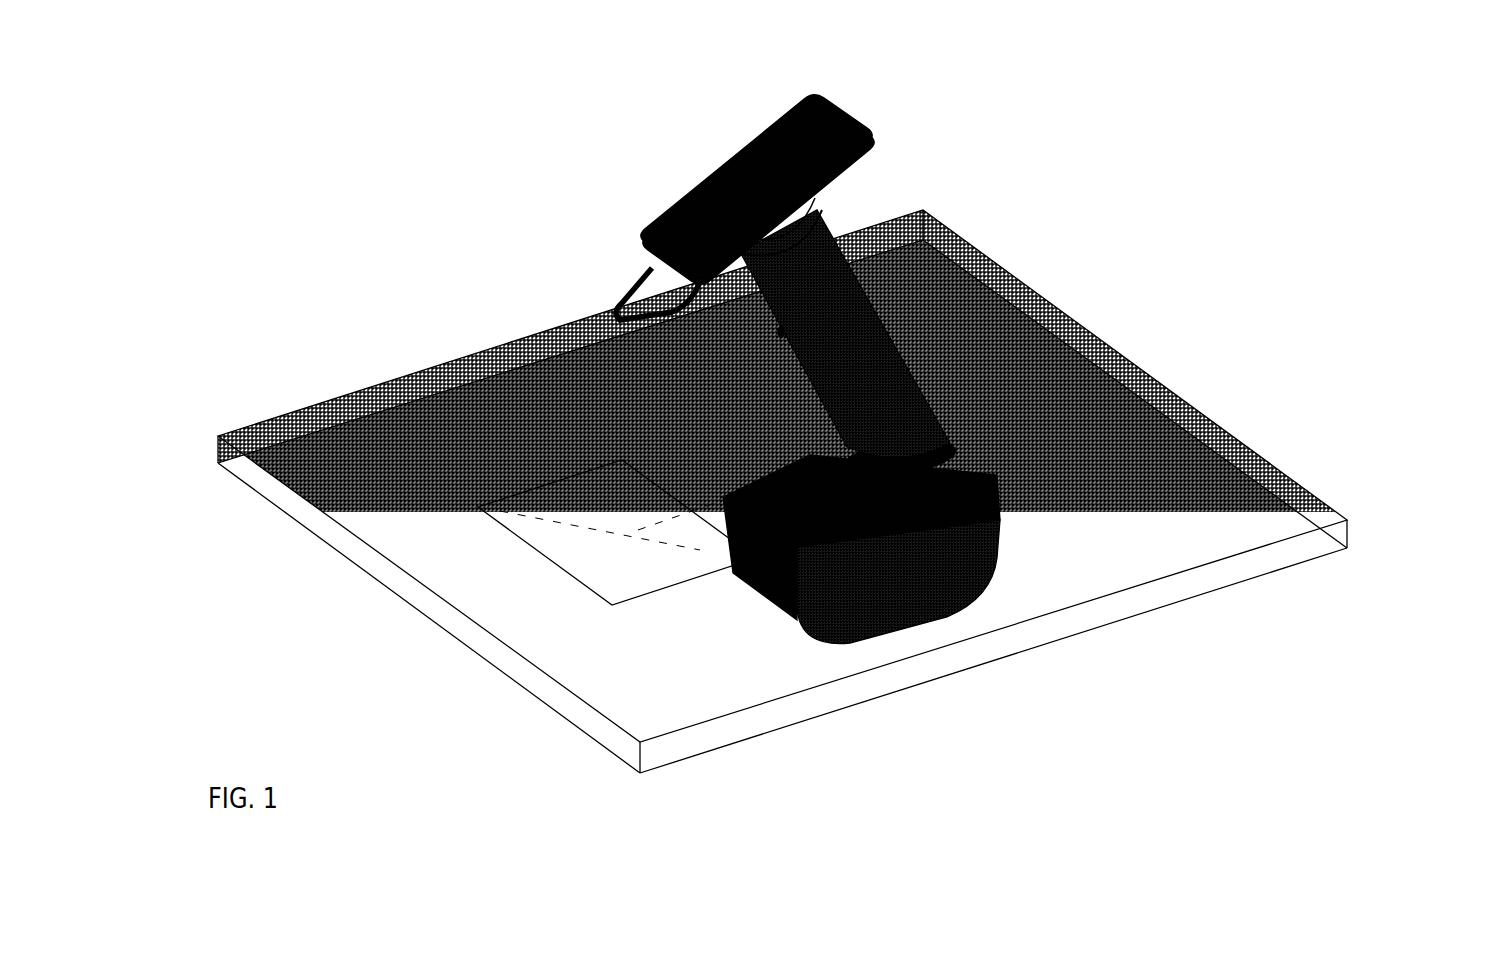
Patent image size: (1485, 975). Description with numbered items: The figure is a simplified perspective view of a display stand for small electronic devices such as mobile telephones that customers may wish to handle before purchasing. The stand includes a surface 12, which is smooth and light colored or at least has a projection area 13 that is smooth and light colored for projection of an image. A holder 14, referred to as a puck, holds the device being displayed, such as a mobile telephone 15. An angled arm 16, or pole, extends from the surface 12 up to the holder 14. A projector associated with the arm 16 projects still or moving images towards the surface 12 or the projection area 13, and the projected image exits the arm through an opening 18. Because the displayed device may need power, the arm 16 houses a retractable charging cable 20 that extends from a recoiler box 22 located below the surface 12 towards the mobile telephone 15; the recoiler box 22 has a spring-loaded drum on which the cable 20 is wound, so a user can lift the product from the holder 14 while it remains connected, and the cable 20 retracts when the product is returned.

The surface 12 is at (1054, 327).
The projection area 13 is at (556, 578).
The holder 14 is at (769, 222).
The mobile telephone 15 is at (677, 204).
The arm 16 is at (871, 309).
The opening 18 is at (744, 296).
The retractable charging cable 20 is at (605, 330).
The recoiler box 22 is at (956, 526).